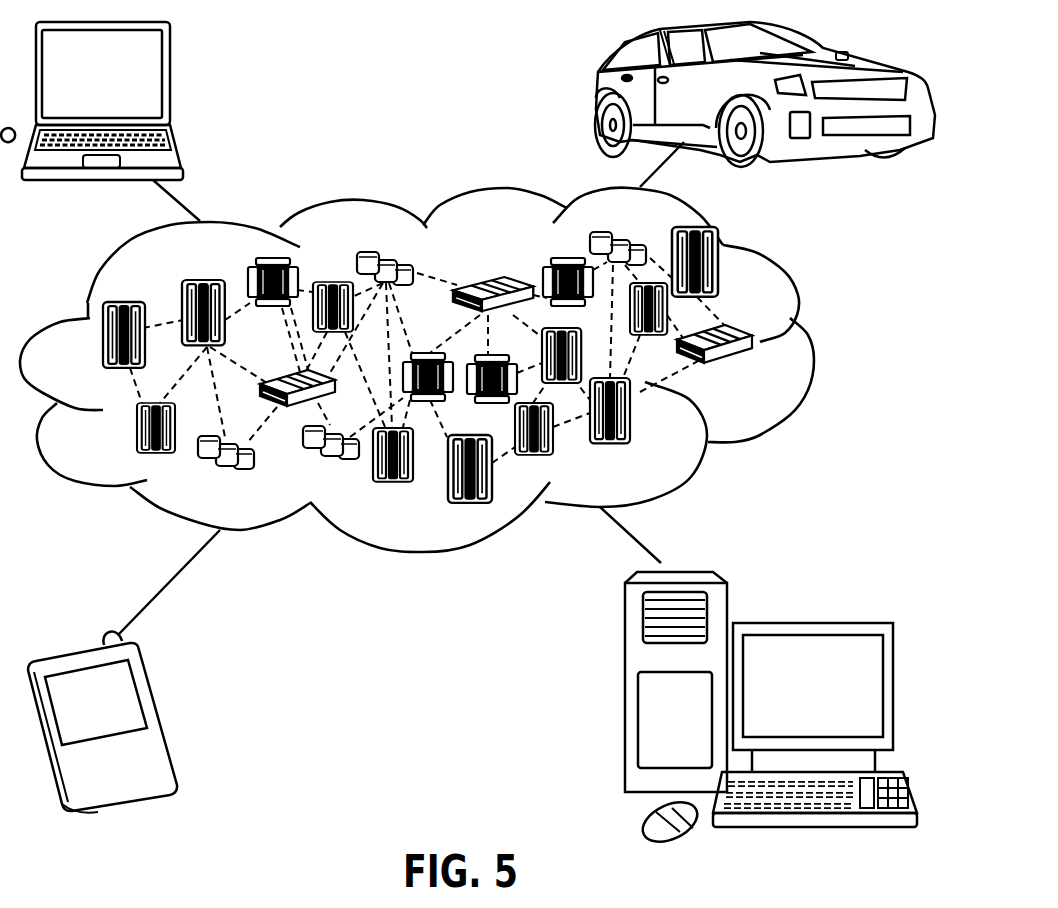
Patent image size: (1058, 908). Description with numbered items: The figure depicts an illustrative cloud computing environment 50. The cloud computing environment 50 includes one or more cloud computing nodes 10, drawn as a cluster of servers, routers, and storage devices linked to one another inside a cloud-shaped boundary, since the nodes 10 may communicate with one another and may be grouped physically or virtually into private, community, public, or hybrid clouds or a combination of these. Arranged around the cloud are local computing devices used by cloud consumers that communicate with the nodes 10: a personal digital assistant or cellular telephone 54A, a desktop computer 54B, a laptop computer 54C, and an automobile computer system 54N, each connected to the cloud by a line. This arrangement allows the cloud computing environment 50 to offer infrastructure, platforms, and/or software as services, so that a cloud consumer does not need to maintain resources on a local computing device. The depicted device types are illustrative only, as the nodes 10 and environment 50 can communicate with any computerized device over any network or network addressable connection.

The cloud computing node 10 is at (768, 380).
The cloud computing environment 50 is at (810, 343).
The personal digital assistant or cellular telephone 54A is at (160, 717).
The desktop computer 54B is at (810, 623).
The laptop computer 54C is at (172, 80).
The automobile computer system 54N is at (601, 92).